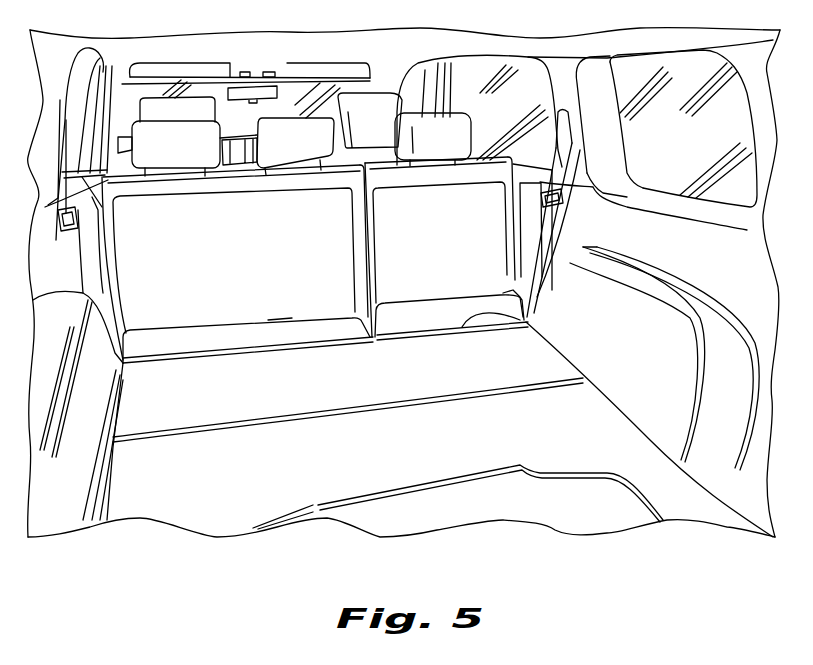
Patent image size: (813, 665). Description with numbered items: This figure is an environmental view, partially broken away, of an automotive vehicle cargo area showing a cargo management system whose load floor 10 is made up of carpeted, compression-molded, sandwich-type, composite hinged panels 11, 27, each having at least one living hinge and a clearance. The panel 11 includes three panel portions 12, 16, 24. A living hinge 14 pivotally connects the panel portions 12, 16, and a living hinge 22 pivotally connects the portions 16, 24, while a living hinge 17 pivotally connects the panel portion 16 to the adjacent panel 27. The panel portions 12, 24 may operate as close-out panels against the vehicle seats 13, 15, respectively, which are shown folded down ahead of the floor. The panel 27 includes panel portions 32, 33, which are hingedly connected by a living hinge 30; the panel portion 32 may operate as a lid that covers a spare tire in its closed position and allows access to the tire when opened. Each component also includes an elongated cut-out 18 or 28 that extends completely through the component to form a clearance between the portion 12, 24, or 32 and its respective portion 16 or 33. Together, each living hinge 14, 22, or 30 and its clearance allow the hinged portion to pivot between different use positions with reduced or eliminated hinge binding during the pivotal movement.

The automotive vehicle load floor 10 is at (617, 313).
The hinged panel 11 is at (125, 382).
The panel portion 12 is at (453, 293).
The vehicle seat 13 is at (451, 254).
The living hinge 14 is at (540, 324).
The vehicle seat 15 is at (250, 266).
The panel portion 16 is at (118, 412).
The living hinge 17 is at (197, 440).
The elongated cut-out 18 is at (377, 335).
The living hinge 22 is at (220, 347).
The panel portion 24 is at (280, 314).
The hinged panel 27 is at (573, 420).
The elongated cut-out 28 is at (607, 473).
The living hinge 30 is at (430, 483).
The panel portion 32 is at (590, 537).
The panel portion 33 is at (700, 495).